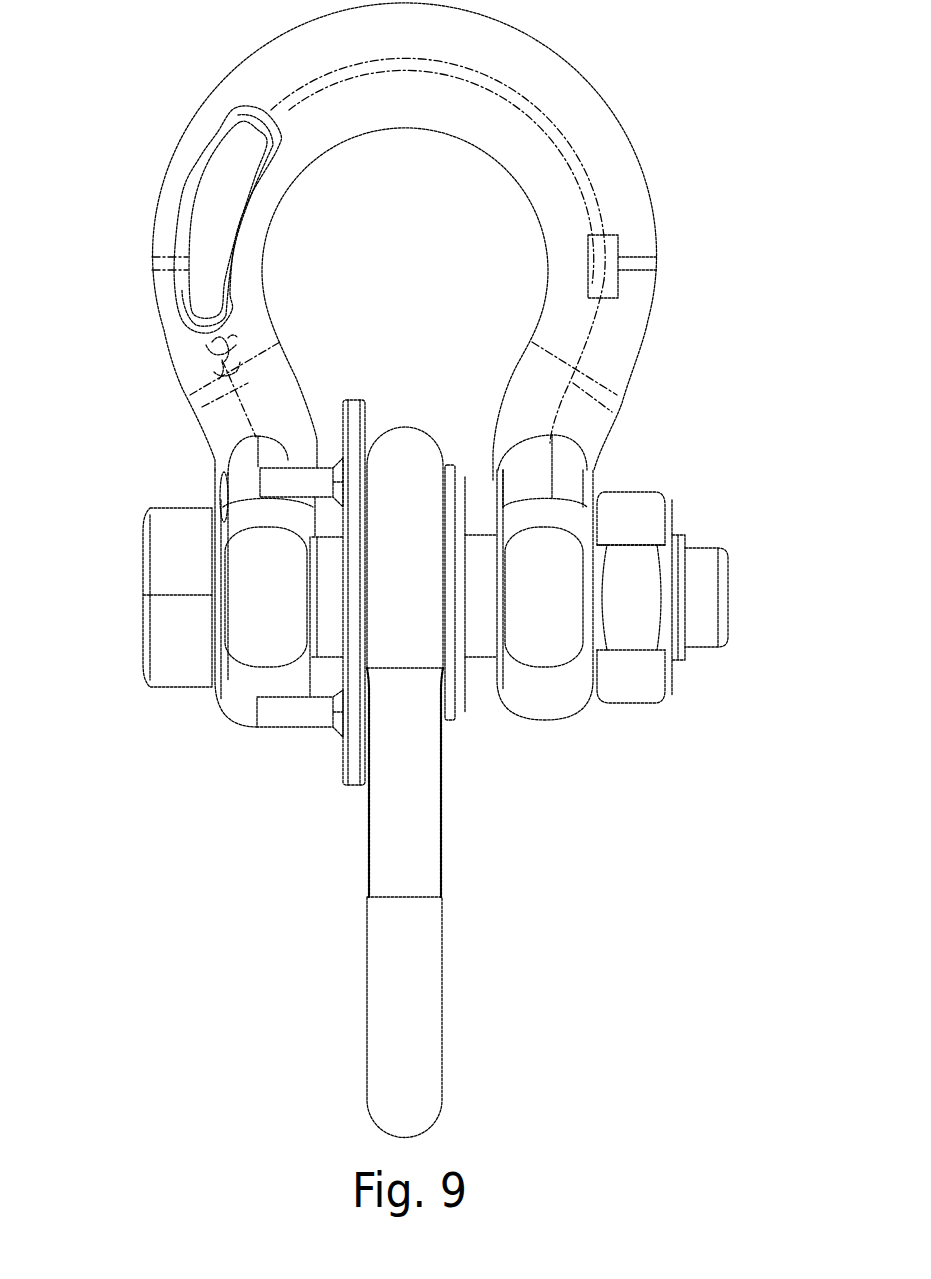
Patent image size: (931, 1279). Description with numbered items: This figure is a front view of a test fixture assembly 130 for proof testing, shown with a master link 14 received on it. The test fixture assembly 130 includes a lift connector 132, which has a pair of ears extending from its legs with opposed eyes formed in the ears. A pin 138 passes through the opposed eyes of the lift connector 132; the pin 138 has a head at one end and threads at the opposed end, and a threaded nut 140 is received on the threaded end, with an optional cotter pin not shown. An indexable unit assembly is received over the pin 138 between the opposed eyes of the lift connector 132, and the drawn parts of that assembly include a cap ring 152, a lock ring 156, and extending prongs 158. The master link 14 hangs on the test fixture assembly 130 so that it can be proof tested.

The test fixture assembly 130 is at (712, 231).
The lift connector 132 is at (582, 128).
The pin 138 is at (163, 557).
The threaded nut 140 is at (630, 515).
The cap ring 152 is at (462, 712).
The lock ring 156 is at (350, 417).
The extending prongs 158 is at (288, 483).
The master link 14 is at (415, 1062).